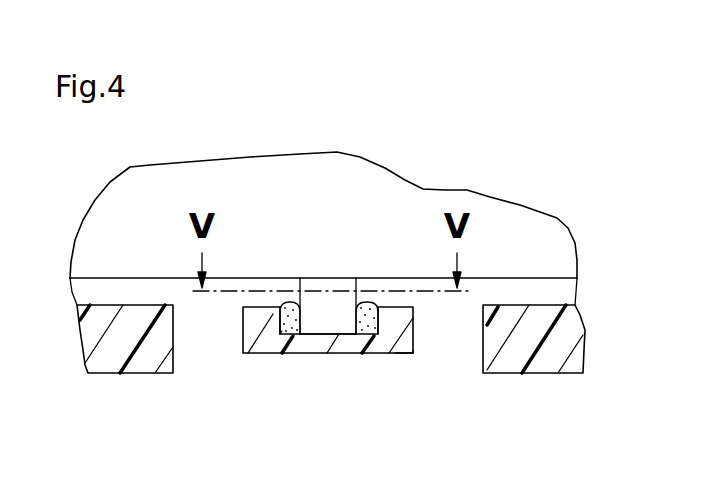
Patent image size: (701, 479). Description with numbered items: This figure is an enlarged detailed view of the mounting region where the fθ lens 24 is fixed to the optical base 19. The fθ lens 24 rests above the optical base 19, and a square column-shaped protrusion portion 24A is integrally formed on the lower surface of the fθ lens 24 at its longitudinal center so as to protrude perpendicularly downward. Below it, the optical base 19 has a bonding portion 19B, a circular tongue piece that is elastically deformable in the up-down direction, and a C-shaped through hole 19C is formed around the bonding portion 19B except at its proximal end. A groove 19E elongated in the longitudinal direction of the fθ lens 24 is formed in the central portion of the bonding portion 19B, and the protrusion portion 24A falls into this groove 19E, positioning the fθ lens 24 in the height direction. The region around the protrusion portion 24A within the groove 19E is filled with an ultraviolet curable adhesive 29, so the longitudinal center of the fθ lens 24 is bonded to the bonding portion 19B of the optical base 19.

The fθ lens 24 is at (537, 222).
The protrusion portion 24A is at (333, 327).
The adhesive 29 is at (370, 302).
The optical base 19 is at (567, 375).
The groove 19E is at (285, 333).
The bonding portion 19B is at (403, 355).
The C-shaped through hole 19C is at (463, 355).